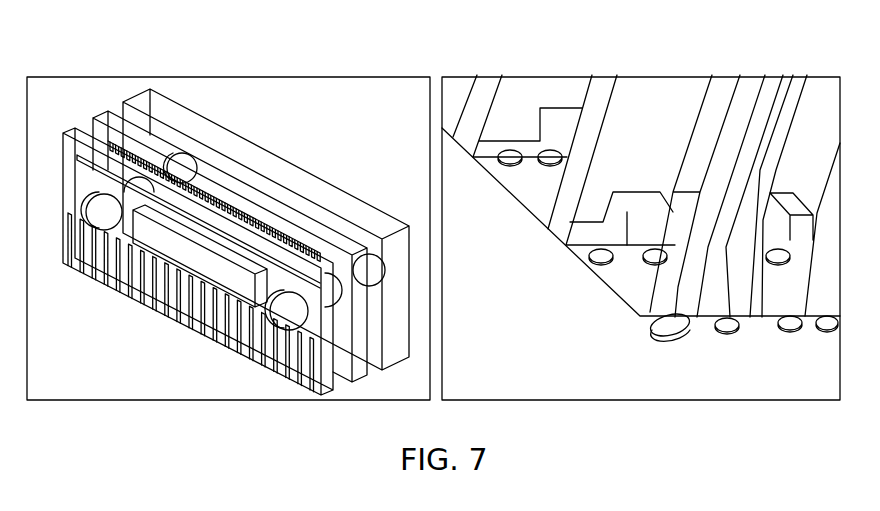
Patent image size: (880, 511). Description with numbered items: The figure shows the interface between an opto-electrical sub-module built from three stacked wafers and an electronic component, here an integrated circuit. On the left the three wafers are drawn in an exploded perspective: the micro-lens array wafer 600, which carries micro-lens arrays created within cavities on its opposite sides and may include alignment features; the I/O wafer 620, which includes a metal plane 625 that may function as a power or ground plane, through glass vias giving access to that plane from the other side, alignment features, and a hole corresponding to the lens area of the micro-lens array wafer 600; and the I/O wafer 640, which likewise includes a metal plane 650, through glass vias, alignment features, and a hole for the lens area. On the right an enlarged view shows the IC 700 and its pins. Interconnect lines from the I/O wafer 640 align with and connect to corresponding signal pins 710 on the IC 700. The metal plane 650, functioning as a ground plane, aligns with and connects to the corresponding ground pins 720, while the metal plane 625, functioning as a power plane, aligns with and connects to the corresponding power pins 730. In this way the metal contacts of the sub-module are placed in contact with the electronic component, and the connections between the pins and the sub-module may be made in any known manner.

The micro-lens array wafer 600 is at (360, 212).
The I/O wafer 620 is at (100, 113).
The I/O wafer 640 is at (68, 182).
The IC 700 is at (500, 386).
The metal plane 625 is at (522, 143).
The metal plane 650 is at (563, 215).
The power pins 730 is at (543, 170).
The ground pins 720 is at (648, 263).
The signal pins 710 is at (717, 330).